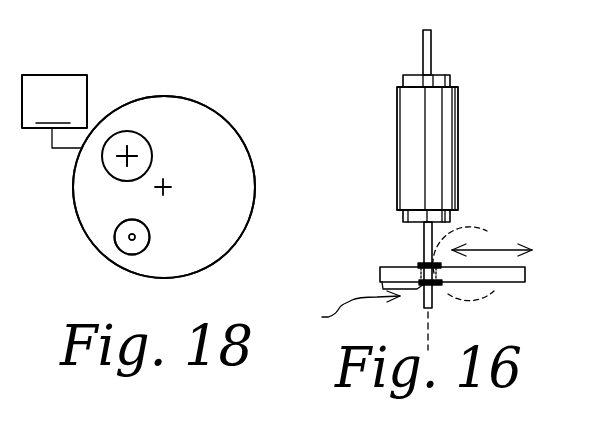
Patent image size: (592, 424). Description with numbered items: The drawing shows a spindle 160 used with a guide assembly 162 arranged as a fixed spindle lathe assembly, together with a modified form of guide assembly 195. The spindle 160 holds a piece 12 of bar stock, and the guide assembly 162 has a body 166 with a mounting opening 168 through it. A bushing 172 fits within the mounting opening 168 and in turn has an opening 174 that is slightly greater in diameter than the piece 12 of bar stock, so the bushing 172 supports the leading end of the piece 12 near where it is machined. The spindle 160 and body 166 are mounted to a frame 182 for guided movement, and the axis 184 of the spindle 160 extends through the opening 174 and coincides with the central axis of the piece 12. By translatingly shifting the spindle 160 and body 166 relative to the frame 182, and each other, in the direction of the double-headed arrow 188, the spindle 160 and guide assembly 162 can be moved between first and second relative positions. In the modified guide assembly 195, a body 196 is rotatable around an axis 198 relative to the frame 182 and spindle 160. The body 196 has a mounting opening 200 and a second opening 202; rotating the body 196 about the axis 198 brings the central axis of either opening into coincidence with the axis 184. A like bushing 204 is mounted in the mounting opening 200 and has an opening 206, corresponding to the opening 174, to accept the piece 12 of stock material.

In FIG. 16, the piece of bar stock 12 is at (431, 42).
In FIG. 16, the spindle 160 is at (458, 110).
In FIG. 16, the guide assembly 162 is at (433, 312).
In FIG. 16, the body 166 is at (525, 274).
In FIG. 16, the mounting opening 168 is at (470, 240).
In FIG. 16, the bushing 172 is at (436, 286).
In FIG. 16, the opening 174 is at (481, 297).
In FIG. 18, the axis 184 is at (130, 155).
In FIG. 16, the axis 184 is at (427, 325).
In FIG. 16, the double-headed arrow 188 is at (502, 250).
In FIG. 18, the frame 182 is at (54, 111).
In FIG. 18, the guide assembly 195 is at (219, 91).
In FIG. 18, the body 196 is at (222, 230).
In FIG. 18, the axis 198 is at (167, 186).
In FIG. 18, the mounting opening 200 is at (120, 248).
In FIG. 18, the second opening 202 is at (127, 142).
In FIG. 18, the bushing 204 is at (150, 234).
In FIG. 18, the opening 206 is at (136, 239).